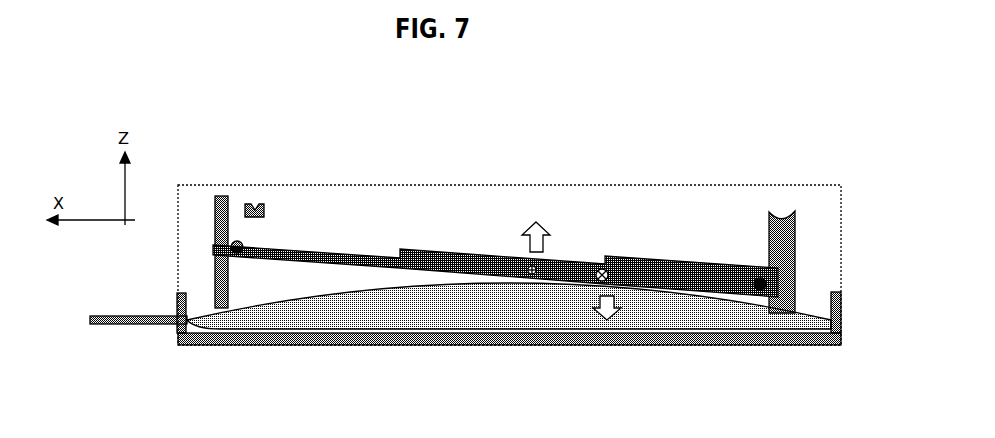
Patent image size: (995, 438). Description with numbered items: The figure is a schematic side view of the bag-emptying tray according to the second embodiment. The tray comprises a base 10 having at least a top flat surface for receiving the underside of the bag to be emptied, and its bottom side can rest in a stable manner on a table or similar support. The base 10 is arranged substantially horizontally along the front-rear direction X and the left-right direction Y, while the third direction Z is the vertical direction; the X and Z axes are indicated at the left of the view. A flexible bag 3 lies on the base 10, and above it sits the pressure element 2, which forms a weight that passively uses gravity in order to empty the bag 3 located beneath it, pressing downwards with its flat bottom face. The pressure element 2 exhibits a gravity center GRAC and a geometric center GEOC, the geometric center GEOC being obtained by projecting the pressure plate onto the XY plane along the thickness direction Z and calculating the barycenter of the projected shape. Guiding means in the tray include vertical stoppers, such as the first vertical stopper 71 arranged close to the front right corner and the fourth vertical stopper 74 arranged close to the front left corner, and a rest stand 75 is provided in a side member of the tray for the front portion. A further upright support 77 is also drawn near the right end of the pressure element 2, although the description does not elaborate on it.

The pressure element 2 is at (669, 242).
The flexible bag 3 is at (481, 318).
The base 10 is at (532, 330).
The first vertical stopper 71 is at (222, 196).
The fourth vertical stopper 74 is at (795, 248).
The rest stand 75 is at (257, 206).
The second support post 77 is at (787, 215).
The geometric center GEOC is at (529, 266).
The gravity center GRAC is at (598, 268).